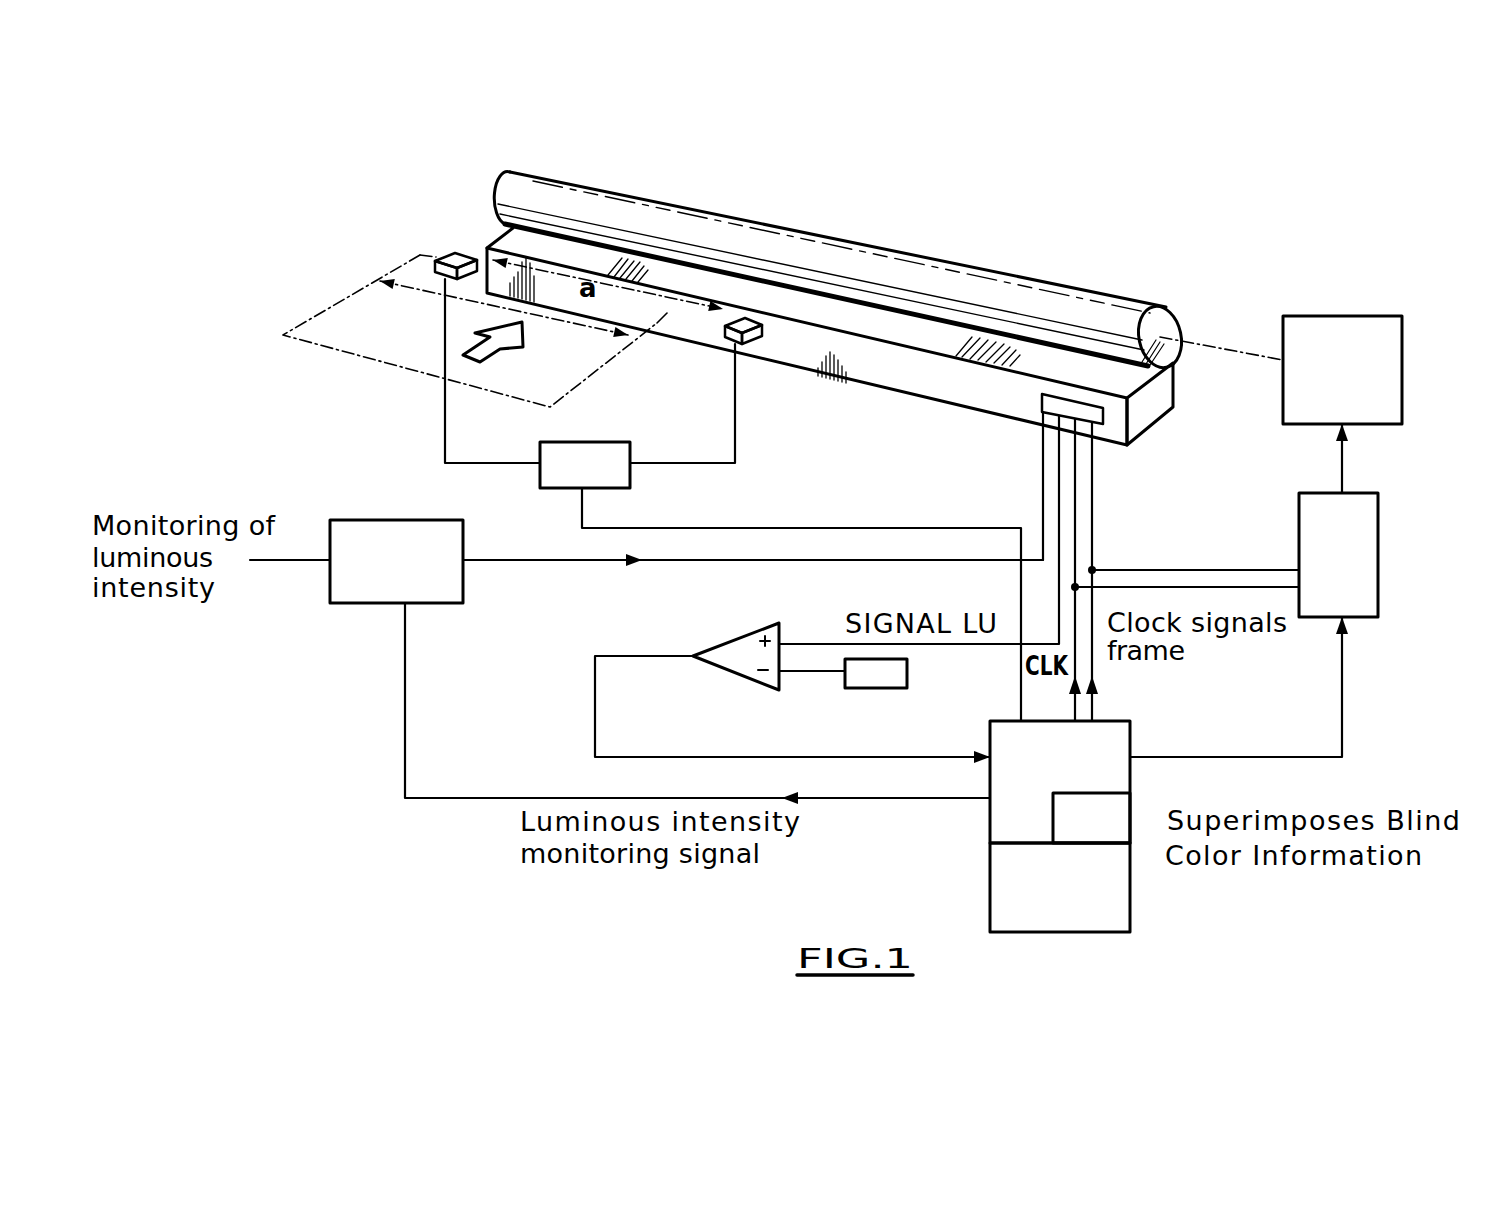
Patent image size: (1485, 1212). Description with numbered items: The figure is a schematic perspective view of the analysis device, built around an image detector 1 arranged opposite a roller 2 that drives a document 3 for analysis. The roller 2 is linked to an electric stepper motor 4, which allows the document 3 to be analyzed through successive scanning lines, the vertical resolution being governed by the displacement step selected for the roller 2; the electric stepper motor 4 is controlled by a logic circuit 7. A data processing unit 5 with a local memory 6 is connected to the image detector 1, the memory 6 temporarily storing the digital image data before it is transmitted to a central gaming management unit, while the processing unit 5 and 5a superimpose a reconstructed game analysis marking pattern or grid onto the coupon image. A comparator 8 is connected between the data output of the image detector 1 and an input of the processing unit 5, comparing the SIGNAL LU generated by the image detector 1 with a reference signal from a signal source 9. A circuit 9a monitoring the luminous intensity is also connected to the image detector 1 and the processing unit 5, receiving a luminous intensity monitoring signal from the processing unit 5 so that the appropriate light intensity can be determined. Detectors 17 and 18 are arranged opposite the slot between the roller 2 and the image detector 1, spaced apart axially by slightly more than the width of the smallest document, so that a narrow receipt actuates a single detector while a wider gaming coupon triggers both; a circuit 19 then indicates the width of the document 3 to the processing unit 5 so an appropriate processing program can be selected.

The image detector 1 is at (1150, 404).
The roller 2 is at (1160, 326).
The document 3 is at (367, 332).
The electric stepper motor 4 is at (1354, 381).
The data processing unit 5 is at (1080, 786).
The processing unit portion superimposing marking pattern 5a is at (1158, 823).
The local memory 6 is at (1073, 895).
The logic circuit 7 is at (1348, 568).
The comparator 8 is at (735, 650).
The signal source 9 is at (870, 688).
The luminous intensity monitoring circuit 9a is at (405, 575).
The detector 17 is at (458, 256).
The detector 18 is at (757, 338).
The document width indicating circuit 19 is at (593, 476).